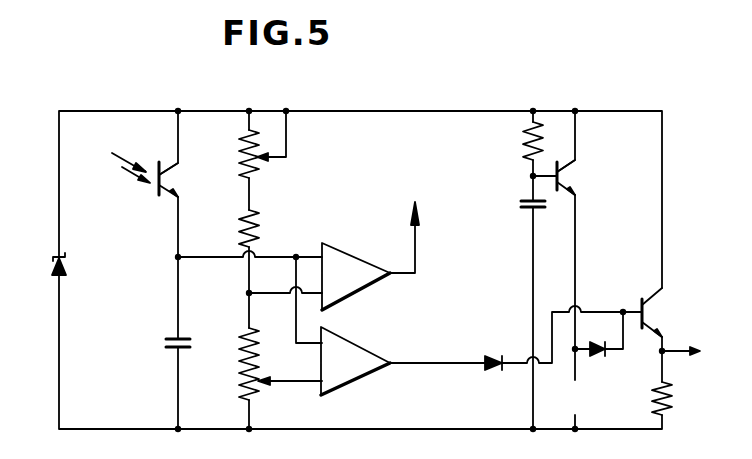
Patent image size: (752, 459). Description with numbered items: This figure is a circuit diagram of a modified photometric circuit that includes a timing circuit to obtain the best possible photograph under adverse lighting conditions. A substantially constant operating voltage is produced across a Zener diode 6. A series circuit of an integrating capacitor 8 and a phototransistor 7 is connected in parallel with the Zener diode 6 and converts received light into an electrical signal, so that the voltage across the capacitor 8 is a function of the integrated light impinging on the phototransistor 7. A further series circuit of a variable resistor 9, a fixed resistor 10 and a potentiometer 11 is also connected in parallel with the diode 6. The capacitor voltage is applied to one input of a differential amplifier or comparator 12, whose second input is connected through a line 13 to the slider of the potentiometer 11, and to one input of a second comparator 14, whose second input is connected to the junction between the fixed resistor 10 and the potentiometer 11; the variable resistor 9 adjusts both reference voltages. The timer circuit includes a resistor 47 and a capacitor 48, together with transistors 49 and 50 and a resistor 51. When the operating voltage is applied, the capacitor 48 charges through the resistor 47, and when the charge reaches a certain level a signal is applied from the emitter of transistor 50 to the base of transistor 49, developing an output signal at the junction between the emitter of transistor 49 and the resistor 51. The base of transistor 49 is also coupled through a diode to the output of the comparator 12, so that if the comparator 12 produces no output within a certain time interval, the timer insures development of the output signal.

The Zener diode 6 is at (66, 273).
The phototransistor 7 is at (153, 193).
The integrating capacitor 8 is at (165, 348).
The variable resistor 9 is at (238, 155).
The fixed resistor 10 is at (238, 230).
The potentiometer 11 is at (236, 355).
The comparator 12 is at (365, 342).
The line 13 is at (290, 383).
The second comparator 14 is at (352, 265).
The resistor 47 is at (520, 148).
The capacitor 48 is at (520, 207).
The transistor 49 is at (657, 312).
The transistor 50 is at (566, 178).
The resistor 51 is at (672, 390).